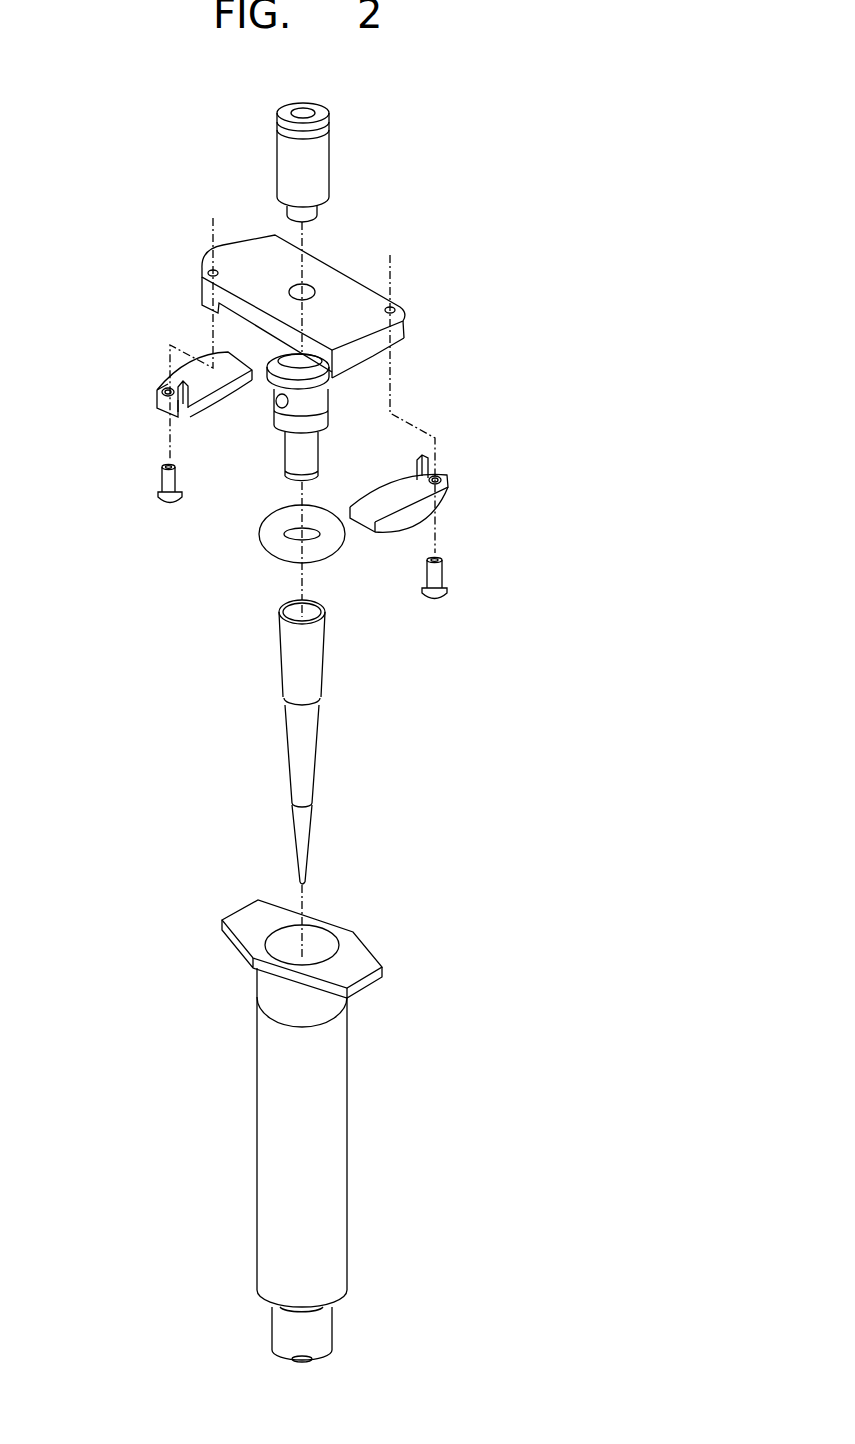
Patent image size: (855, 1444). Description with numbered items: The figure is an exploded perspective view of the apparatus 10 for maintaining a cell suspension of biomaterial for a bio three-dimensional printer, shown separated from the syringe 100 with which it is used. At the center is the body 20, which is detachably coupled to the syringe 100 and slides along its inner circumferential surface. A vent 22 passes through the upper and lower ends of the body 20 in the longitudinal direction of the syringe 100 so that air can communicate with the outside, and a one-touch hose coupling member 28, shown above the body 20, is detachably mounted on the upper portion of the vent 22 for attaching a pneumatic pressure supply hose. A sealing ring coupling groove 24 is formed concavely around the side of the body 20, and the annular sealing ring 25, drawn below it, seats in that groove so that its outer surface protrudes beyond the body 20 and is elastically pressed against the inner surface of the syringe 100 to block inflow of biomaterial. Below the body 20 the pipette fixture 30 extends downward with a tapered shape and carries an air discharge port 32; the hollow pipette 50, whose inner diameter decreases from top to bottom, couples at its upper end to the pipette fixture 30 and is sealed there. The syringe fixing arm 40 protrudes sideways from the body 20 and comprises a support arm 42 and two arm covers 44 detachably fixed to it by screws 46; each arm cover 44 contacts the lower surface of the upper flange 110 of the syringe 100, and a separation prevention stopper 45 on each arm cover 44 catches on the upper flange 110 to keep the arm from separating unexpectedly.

The apparatus 10 is at (489, 259).
The body 20 is at (275, 345).
The vent 22 is at (310, 291).
The sealing ring coupling groove 24 is at (333, 360).
The sealing ring 25 is at (272, 543).
The one-touch hose coupling member 28 is at (329, 158).
The pipette fixture 30 is at (292, 455).
The air discharge port 32 is at (280, 403).
The syringe fixing arm 40 is at (93, 243).
The support arm 42 is at (232, 256).
The arm cover 44 is at (178, 377).
The separation prevention stopper 45 is at (178, 400).
The screw 46 is at (159, 481).
The pipette 50 is at (321, 665).
The syringe 100 is at (340, 1112).
The upper flange 110 is at (242, 912).